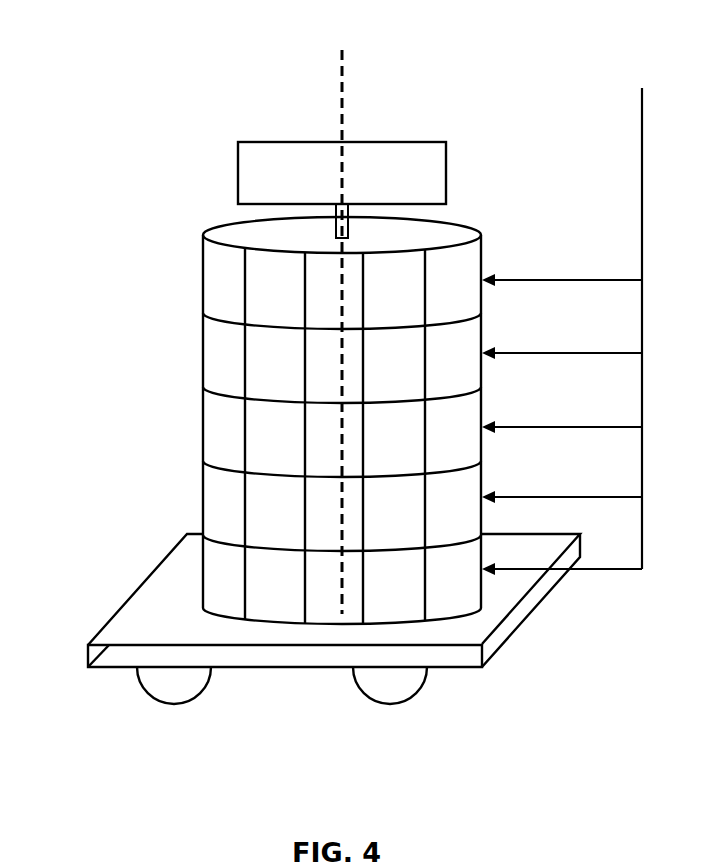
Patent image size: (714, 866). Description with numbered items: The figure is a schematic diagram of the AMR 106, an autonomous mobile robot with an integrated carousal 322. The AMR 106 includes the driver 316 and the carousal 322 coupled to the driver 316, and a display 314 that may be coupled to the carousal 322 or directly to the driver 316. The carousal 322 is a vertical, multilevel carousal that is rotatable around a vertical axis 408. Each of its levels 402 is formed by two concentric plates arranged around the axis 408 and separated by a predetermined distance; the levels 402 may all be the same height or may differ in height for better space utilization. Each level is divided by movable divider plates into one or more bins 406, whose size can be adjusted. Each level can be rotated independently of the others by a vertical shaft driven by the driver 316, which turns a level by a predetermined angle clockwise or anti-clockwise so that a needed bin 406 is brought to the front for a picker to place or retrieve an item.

The AMR 106 is at (212, 60).
The display 314 is at (239, 142).
The axis 408 is at (342, 90).
The levels 402 is at (573, 319).
The carousal 322 is at (203, 258).
The bins 406 is at (265, 450).
The driver 316 is at (92, 640).